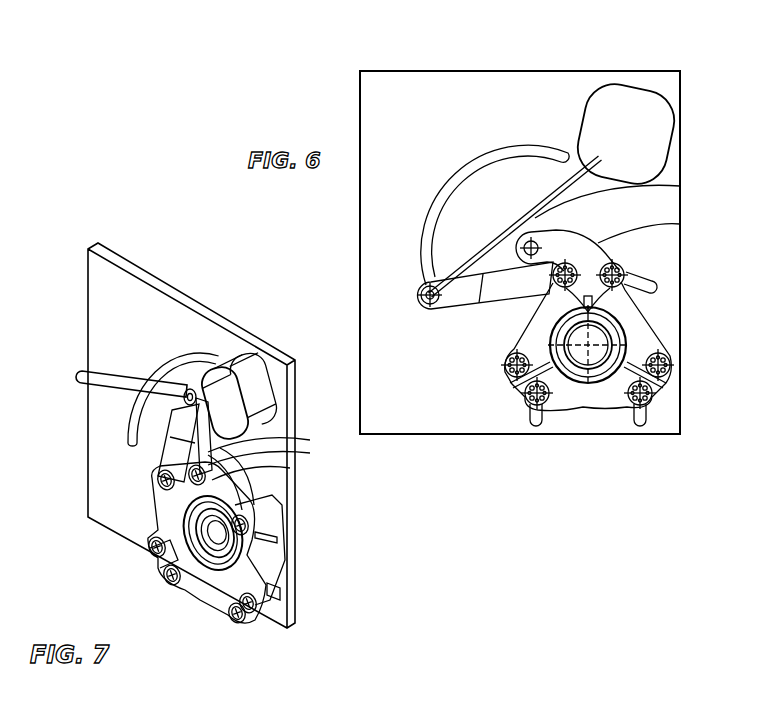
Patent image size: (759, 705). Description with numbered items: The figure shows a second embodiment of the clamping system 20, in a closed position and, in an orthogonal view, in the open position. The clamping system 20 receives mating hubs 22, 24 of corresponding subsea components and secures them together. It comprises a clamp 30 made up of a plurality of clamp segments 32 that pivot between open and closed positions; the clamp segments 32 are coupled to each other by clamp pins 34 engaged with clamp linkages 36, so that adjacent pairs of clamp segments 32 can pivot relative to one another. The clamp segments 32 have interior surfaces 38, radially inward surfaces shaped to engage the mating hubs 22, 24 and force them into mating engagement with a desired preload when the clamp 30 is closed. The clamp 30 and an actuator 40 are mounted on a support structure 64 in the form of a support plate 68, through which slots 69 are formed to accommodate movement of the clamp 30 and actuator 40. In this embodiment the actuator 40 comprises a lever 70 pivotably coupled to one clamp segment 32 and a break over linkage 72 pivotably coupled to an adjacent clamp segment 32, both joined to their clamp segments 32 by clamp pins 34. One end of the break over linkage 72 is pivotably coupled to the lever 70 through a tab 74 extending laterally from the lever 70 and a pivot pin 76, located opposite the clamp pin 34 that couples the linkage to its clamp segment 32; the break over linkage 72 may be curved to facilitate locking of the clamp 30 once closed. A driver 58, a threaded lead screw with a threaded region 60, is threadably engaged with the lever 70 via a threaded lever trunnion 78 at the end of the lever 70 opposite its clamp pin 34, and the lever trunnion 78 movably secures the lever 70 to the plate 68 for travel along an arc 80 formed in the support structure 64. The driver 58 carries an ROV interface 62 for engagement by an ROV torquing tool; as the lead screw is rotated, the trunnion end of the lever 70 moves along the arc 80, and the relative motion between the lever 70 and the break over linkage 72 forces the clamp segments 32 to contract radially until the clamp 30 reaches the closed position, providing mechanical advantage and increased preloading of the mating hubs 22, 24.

In FIG. 6, the clamping system 20 is at (600, 57).
In FIG. 7, the clamping system 20 is at (213, 274).
In FIG. 6, the mating hub 22 is at (588, 345).
In FIG. 7, the mating hub 22 is at (200, 580).
In FIG. 7, the mating hub 24 is at (258, 510).
In FIG. 6, the clamp 30 is at (596, 357).
In FIG. 7, the clamp 30 is at (207, 568).
In FIG. 6, the clamp segments 32 is at (643, 330).
In FIG. 7, the clamp segments 32 is at (160, 510).
In FIG. 6, the clamp pins 34 is at (622, 267).
In FIG. 7, the clamp pins 34 is at (158, 479).
In FIG. 6, the clamp linkages 36 is at (520, 391).
In FIG. 7, the interior surfaces 38 is at (165, 553).
In FIG. 6, the actuator 40 is at (618, 243).
In FIG. 7, the actuator 40 is at (261, 454).
In FIG. 6, the driver 58 is at (467, 251).
In FIG. 7, the driver 58 is at (96, 370).
In FIG. 6, the threaded region 60 is at (452, 276).
In FIG. 7, the threaded region 60 is at (165, 383).
In FIG. 6, the ROV interface 62 is at (667, 114).
In FIG. 7, the ROV interface 62 is at (269, 394).
In FIG. 6, the support structure 64 is at (427, 67).
In FIG. 7, the support structure 64 is at (124, 251).
In FIG. 6, the support plate 68 is at (400, 104).
In FIG. 7, the support plate 68 is at (115, 291).
In FIG. 6, the slots 69 is at (656, 284).
In FIG. 6, the lever 70 is at (465, 307).
In FIG. 7, the lever 70 is at (195, 435).
In FIG. 6, the break over linkage 72 is at (680, 224).
In FIG. 7, the break over linkage 72 is at (262, 483).
In FIG. 6, the tab 74 is at (492, 288).
In FIG. 7, the tab 74 is at (205, 445).
In FIG. 6, the pivot pin 76 is at (680, 187).
In FIG. 7, the pivot pin 76 is at (242, 461).
In FIG. 6, the lever trunnion 78 is at (422, 309).
In FIG. 7, the lever trunnion 78 is at (183, 398).
In FIG. 6, the arc 80 is at (445, 180).
In FIG. 7, the arc 80 is at (150, 352).